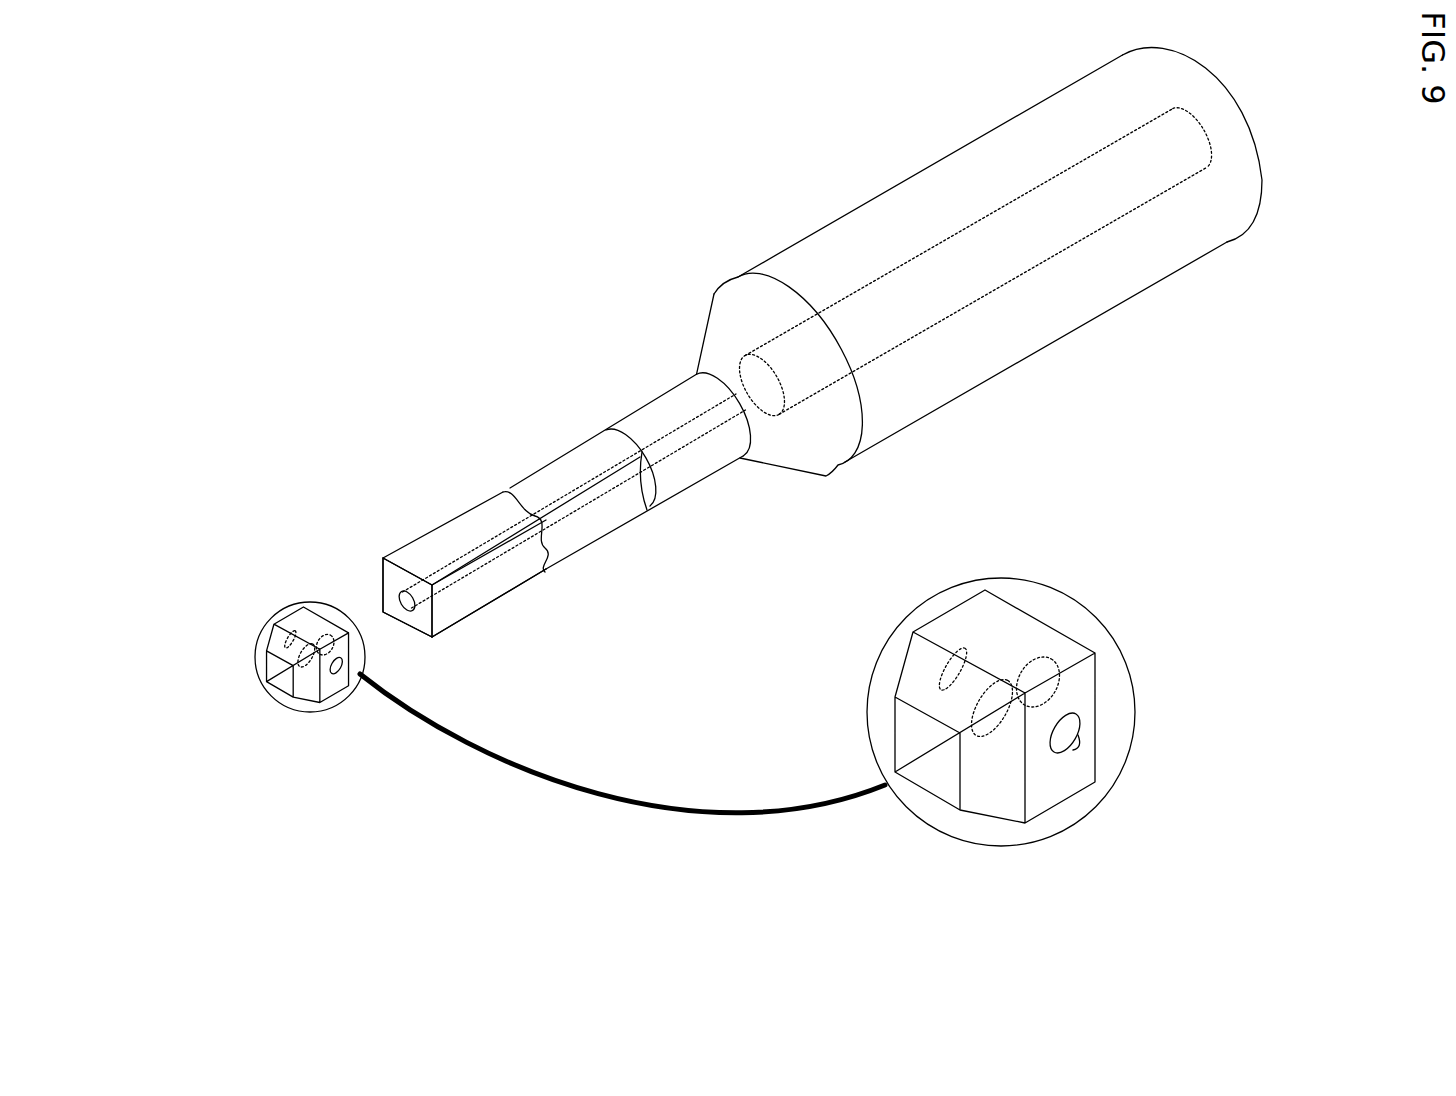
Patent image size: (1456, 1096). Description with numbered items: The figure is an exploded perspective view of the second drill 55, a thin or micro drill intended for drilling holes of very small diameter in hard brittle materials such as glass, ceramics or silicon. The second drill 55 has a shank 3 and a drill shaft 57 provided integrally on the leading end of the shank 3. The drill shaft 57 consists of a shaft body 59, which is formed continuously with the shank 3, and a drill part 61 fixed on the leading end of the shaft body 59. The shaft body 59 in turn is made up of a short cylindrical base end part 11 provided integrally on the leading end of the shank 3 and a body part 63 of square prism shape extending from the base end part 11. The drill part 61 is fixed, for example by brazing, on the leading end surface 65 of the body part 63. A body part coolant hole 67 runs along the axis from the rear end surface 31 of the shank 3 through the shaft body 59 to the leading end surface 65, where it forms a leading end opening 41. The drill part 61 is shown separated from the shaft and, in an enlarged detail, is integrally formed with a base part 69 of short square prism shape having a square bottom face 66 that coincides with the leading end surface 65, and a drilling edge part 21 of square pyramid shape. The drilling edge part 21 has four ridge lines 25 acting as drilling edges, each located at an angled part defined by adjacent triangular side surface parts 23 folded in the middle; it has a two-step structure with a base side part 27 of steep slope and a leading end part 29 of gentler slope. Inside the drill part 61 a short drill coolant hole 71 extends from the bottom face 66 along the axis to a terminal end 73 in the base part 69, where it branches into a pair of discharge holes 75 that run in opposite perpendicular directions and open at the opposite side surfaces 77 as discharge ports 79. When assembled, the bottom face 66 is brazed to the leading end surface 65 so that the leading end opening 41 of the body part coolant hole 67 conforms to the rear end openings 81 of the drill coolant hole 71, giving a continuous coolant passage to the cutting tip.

The shank 3 is at (1115, 334).
The rear end surface 31 is at (1247, 108).
The second drill 55 is at (514, 236).
The base end part 11 is at (666, 415).
The shaft body 59 is at (505, 462).
The drill shaft 57 is at (361, 540).
The leading end surface 65 is at (392, 583).
The leading end opening 41 is at (430, 610).
The body part 63 is at (523, 568).
The bottom face 66 is at (1065, 635).
The body part coolant hole 67 is at (893, 318).
The drill part 61 is at (280, 595).
The drilling edge part 21 is at (984, 830).
The triangular side surface parts 23 is at (950, 770).
The ridge lines 25 is at (950, 630).
The base side part 27 is at (922, 668).
The leading end part 29 is at (893, 772).
The base part 69 is at (957, 632).
The drill coolant hole 71 is at (1038, 677).
The terminal end 73 is at (1003, 737).
The discharge holes 75 is at (990, 660).
The side surfaces 77 is at (957, 602).
The discharge ports 79 is at (950, 652).
The rear end openings 81 is at (1053, 663).